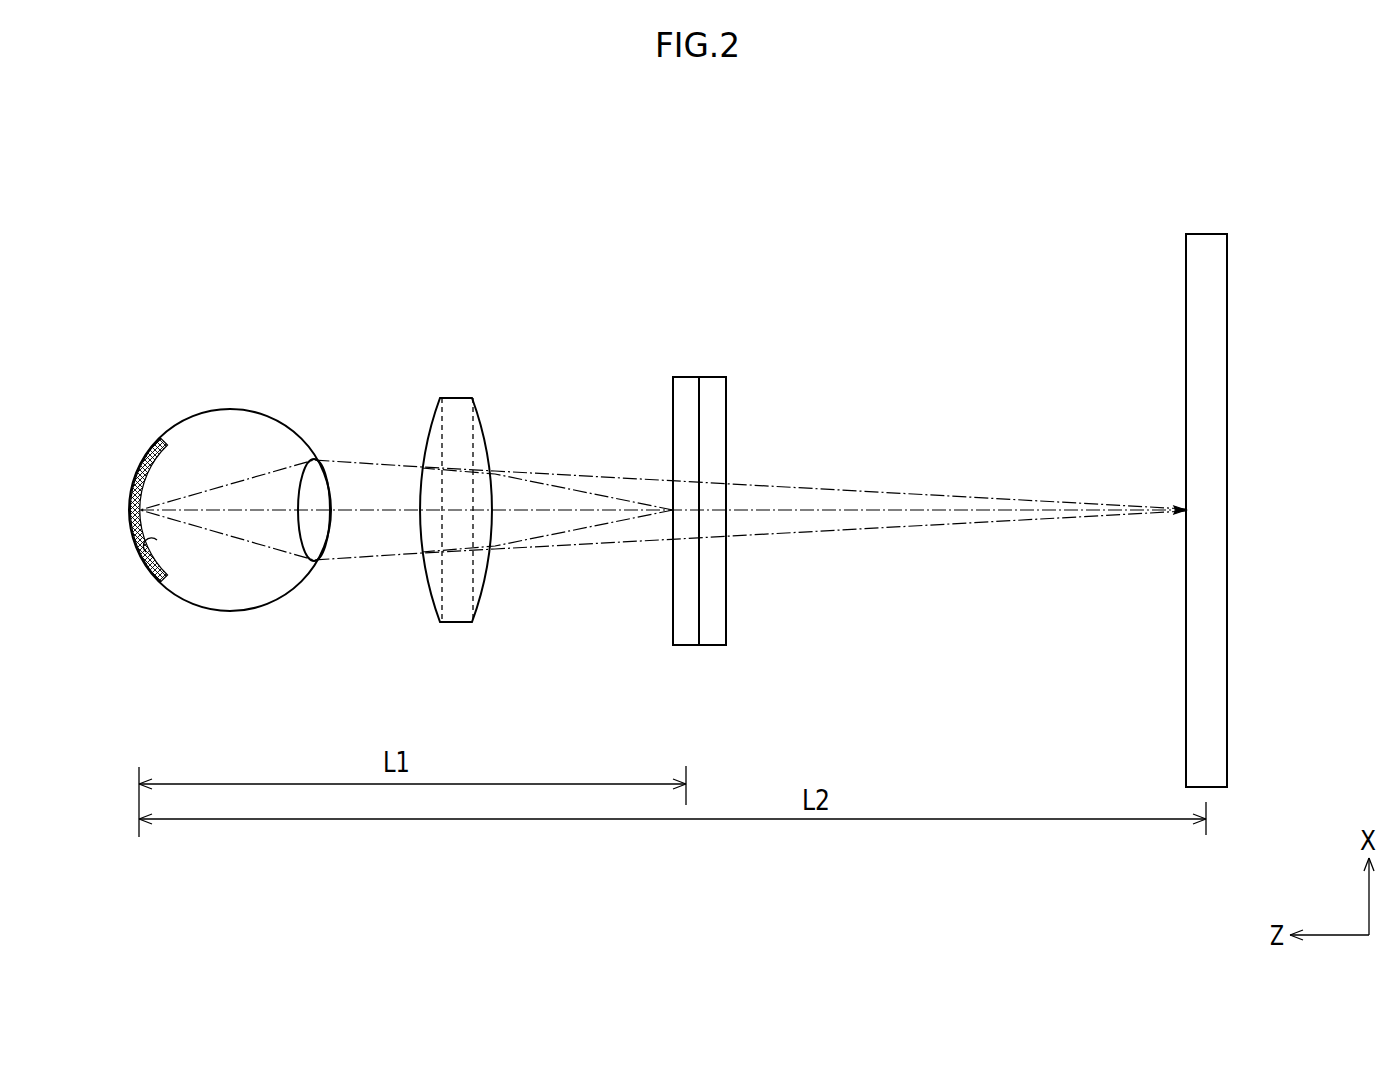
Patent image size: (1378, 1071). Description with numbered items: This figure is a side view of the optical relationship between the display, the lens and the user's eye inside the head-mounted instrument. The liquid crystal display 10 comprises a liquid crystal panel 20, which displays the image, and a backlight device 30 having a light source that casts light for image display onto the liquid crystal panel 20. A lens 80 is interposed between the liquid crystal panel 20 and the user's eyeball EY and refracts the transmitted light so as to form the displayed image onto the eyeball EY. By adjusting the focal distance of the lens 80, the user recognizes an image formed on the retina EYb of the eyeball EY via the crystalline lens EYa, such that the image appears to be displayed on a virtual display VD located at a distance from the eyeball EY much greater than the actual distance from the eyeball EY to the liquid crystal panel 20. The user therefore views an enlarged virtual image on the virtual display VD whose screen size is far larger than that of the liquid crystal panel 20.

The liquid crystal display 10 is at (701, 490).
The liquid crystal panel 20 is at (689, 647).
The backlight device 30 is at (713, 647).
The lens 80 is at (460, 623).
The eyeball EY is at (192, 414).
The crystalline lens EYa is at (301, 486).
The retina EYb is at (155, 546).
The virtual display VD is at (1209, 233).